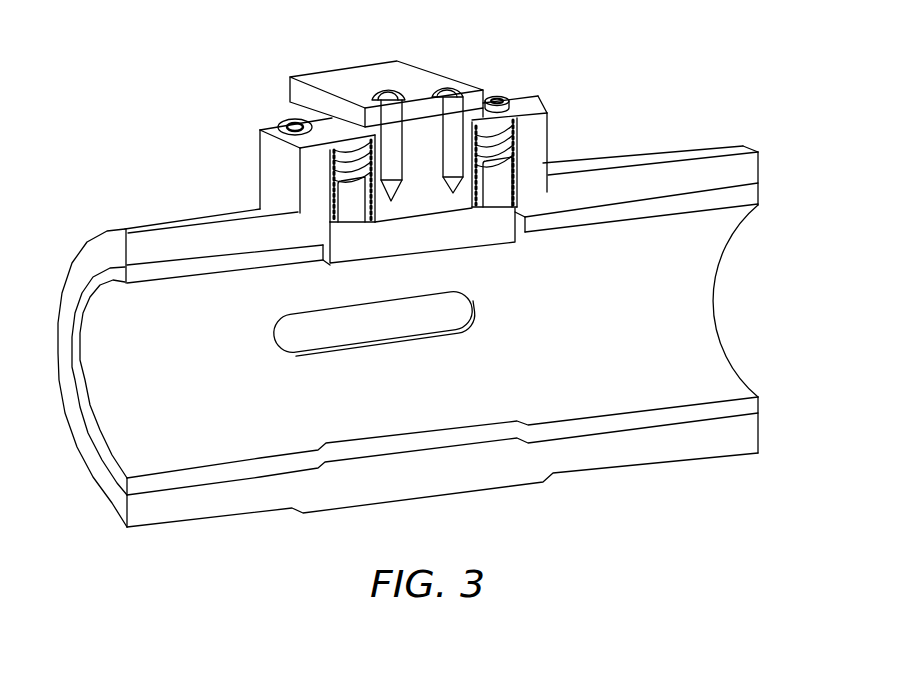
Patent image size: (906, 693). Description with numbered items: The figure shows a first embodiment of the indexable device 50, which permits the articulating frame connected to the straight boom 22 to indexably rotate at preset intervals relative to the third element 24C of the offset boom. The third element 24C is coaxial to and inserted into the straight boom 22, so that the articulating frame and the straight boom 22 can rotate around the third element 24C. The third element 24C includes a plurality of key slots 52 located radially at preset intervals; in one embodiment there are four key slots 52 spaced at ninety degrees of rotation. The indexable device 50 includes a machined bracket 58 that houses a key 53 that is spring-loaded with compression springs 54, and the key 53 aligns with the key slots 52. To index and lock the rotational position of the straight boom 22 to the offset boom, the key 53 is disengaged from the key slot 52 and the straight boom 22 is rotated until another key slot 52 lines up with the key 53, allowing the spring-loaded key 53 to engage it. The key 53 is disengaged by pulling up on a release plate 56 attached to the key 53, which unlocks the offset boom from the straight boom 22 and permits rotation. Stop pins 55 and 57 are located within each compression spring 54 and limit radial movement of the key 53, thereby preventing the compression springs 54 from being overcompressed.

The straight boom 22 is at (743, 170).
The third element of the offset boom 24C is at (722, 318).
The indexable device 50 is at (668, 105).
The key slots 52 is at (393, 336).
The key 53 is at (514, 213).
The compression springs 54 is at (519, 172).
The stop pin 55 is at (348, 171).
The release plate 56 is at (417, 60).
The stop pin 57 is at (497, 157).
The machined bracket 58 is at (265, 168).